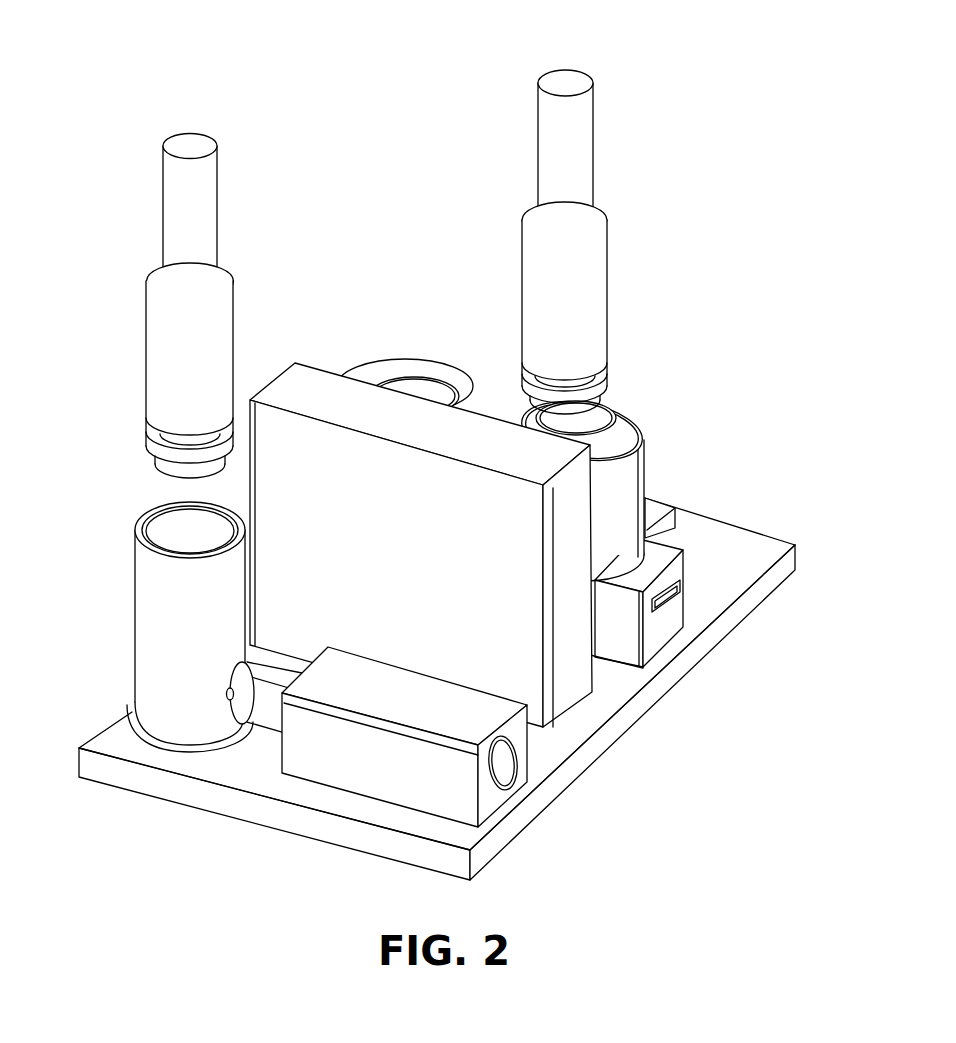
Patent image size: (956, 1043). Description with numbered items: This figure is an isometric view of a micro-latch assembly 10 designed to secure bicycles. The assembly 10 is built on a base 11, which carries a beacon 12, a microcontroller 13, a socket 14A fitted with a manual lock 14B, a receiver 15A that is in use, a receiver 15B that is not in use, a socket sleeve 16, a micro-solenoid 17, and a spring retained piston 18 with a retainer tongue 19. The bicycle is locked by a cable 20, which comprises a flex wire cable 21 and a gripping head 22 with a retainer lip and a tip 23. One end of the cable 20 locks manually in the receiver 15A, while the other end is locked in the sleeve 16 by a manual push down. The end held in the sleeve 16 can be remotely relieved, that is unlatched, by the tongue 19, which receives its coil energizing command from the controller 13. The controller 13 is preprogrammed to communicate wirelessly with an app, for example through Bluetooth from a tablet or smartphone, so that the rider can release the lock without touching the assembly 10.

The assembly 10 is at (307, 67).
The base 11 is at (310, 843).
The beacon 12 is at (595, 672).
The microcontroller 13 is at (648, 496).
The socket 14A is at (632, 402).
The manual lock 14B is at (690, 603).
The receiver 15A is at (518, 414).
The receiver 15B is at (403, 365).
The socket sleeve 16 is at (160, 507).
The micro-solenoid 17 is at (532, 752).
The spring retained piston 18 is at (270, 722).
The retainer tongue 19 is at (222, 695).
The cable 20 is at (254, 217).
The flex wire cable 21 is at (597, 128).
The gripping head 22 is at (607, 276).
The tip 23 is at (610, 366).